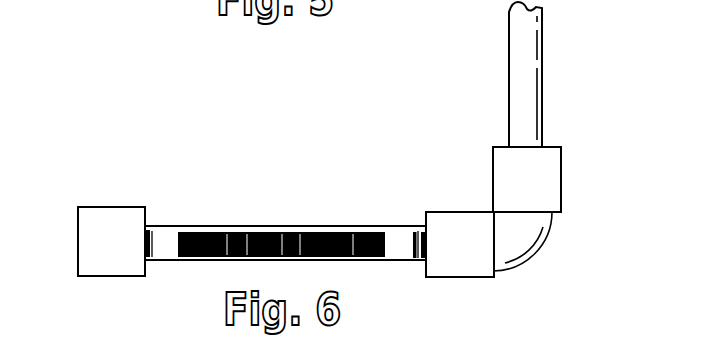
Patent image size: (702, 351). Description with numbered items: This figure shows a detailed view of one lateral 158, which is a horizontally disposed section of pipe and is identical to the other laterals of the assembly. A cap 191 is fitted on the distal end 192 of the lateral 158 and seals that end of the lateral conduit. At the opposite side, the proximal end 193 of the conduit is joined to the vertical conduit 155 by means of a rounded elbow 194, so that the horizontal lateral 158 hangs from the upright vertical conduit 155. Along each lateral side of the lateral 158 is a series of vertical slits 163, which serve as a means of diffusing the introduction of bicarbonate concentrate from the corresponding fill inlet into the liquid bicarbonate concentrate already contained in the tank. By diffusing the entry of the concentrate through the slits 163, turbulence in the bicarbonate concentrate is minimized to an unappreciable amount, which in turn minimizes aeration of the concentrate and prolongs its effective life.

The vertical conduit 155 is at (544, 68).
The lateral 158 is at (321, 220).
The vertical slits 163 is at (266, 228).
The cap 191 is at (108, 231).
The distal end 192 is at (152, 242).
The proximal end 193 is at (414, 240).
The rounded elbow 194 is at (535, 252).